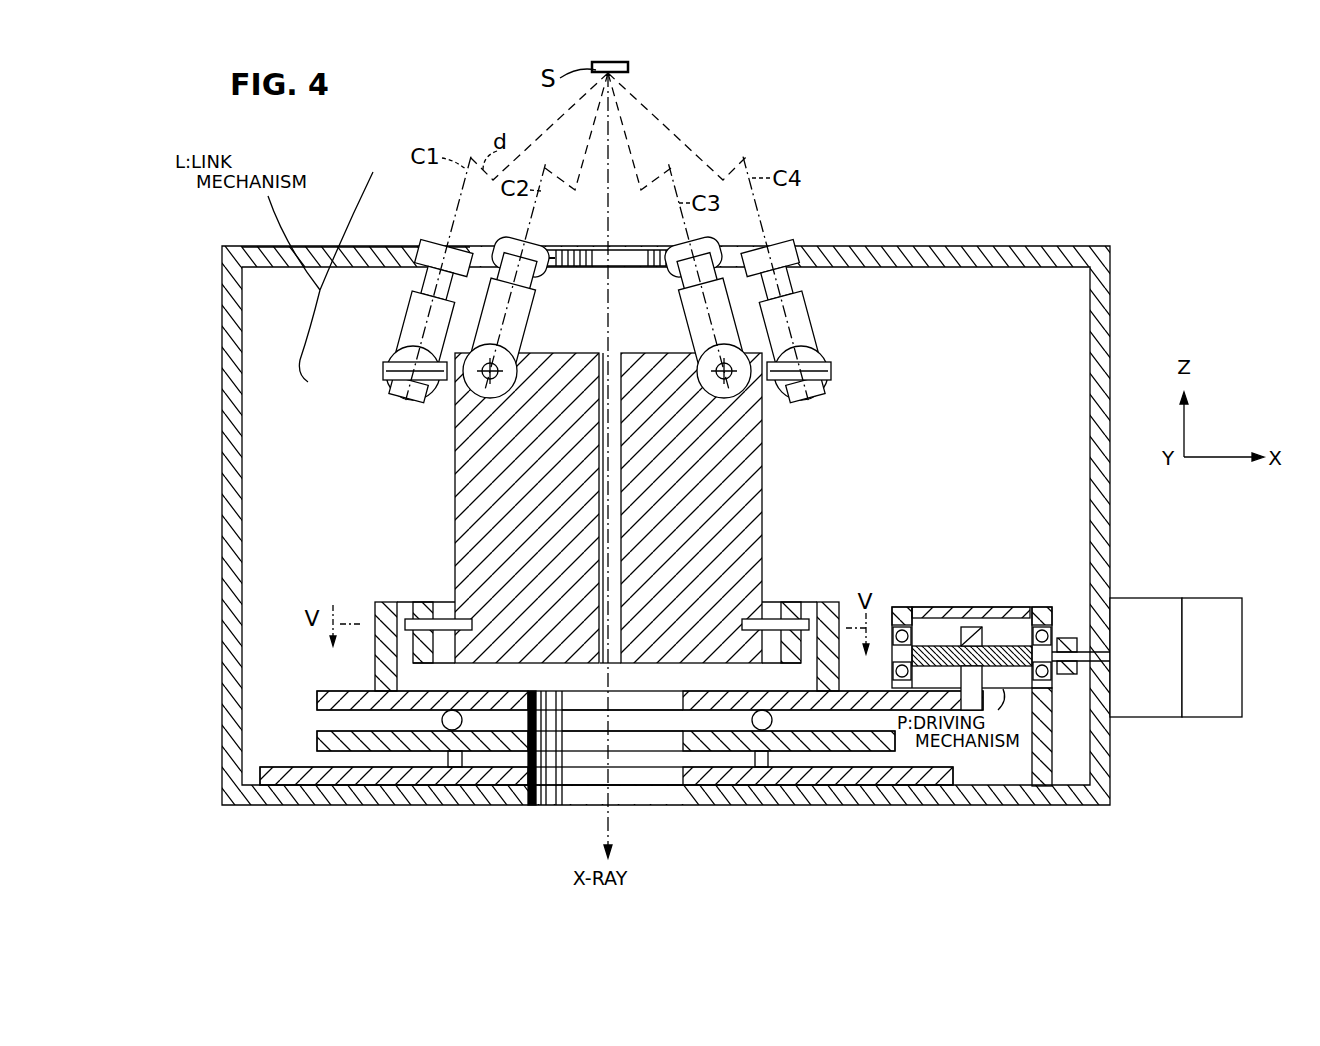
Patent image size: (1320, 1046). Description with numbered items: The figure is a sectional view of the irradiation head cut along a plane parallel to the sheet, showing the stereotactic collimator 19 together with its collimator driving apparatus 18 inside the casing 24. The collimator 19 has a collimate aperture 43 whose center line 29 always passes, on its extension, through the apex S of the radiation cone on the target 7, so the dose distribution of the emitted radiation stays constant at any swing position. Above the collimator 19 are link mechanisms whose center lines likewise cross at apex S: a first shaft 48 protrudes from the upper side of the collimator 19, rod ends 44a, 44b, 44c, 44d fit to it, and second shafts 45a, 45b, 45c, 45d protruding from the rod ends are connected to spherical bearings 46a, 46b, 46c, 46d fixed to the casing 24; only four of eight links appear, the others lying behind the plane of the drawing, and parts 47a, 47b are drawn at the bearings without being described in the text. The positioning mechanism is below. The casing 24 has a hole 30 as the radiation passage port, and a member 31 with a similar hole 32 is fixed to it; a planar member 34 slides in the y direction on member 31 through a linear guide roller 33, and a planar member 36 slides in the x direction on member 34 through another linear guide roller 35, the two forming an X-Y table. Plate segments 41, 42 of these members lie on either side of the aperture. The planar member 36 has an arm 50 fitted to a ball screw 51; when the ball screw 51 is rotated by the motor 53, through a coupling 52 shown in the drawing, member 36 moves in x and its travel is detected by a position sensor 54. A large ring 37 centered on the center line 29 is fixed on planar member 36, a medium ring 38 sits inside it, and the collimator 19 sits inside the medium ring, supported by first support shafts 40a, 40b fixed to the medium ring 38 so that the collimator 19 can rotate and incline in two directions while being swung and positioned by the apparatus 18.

The target 7 is at (632, 66).
The collimator driving apparatus 18 is at (1114, 301).
The stereotactic collimator 19 is at (763, 490).
The casing 24 is at (973, 246).
The center line of collimate aperture 29 is at (612, 826).
The hole 30 is at (537, 806).
The member 31 is at (953, 774).
The hole 32 is at (580, 792).
The linear guide roller 33 is at (450, 768).
The planar member 34 is at (318, 738).
The linear guide roller 35 is at (452, 709).
The planar member 36 is at (318, 698).
The large ring 37 is at (380, 602).
The medium ring 38 is at (425, 615).
The first support shaft 40a is at (738, 624).
The first support shaft 40b is at (472, 620).
The plate segment 41 is at (577, 740).
The plate segment 42 is at (681, 700).
The collimate aperture 43 is at (614, 665).
The rod end 44a is at (532, 319).
The rod end 44b is at (682, 319).
The rod end 44c is at (405, 319).
The rod end 44d is at (808, 319).
The second shaft 45a is at (537, 286).
The second shaft 45b is at (680, 288).
The second shaft 45c is at (420, 286).
The second shaft 45d is at (795, 284).
The spherical bearing 46a is at (500, 243).
The spherical bearing 46b is at (718, 246).
The spherical bearing 46c is at (436, 240).
The spherical bearing 46d is at (796, 238).
The connecting rod 47a is at (540, 243).
The connecting rod 47b is at (688, 243).
The first shaft 48 is at (383, 371).
The arm 50 is at (983, 636).
The ball screw 51 is at (936, 612).
The coupling 52 is at (1067, 637).
The motor 53 is at (1140, 598).
The position sensor 54 is at (1218, 598).